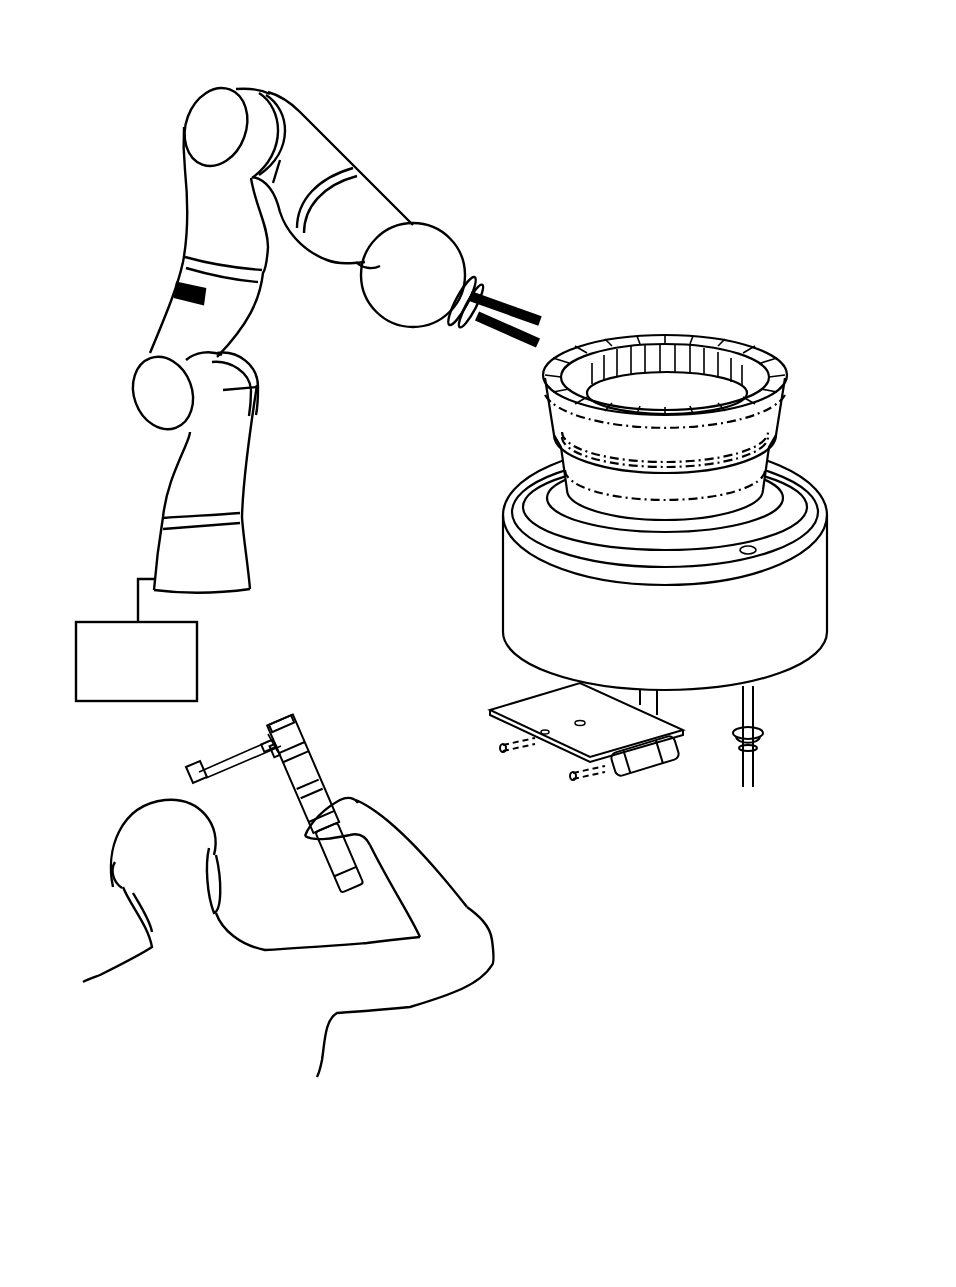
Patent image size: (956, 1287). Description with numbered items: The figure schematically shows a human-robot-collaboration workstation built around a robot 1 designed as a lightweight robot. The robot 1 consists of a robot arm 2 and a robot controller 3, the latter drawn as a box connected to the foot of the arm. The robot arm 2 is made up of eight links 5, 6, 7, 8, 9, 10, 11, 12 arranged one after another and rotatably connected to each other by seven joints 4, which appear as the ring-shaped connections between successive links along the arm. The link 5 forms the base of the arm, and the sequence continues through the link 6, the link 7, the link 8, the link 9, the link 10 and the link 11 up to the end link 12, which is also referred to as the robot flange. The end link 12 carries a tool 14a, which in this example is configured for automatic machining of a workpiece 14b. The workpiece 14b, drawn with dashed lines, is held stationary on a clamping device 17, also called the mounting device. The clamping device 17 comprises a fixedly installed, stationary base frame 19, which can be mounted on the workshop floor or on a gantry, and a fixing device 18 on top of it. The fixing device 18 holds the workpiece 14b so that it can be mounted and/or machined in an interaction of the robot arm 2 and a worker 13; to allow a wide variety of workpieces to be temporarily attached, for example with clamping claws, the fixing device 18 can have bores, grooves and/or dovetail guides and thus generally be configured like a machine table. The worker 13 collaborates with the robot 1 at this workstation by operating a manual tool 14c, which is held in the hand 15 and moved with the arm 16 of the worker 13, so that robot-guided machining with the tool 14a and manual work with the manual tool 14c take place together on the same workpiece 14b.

The robot 1 is at (443, 117).
The robot arm 2 is at (180, 261).
The robot controller 3 is at (120, 628).
The joints 4 is at (268, 97).
The link 5 is at (173, 555).
The link 6 is at (185, 463).
The link 7 is at (173, 325).
The link 8 is at (190, 207).
The link 9 is at (320, 141).
The link 10 is at (382, 205).
The link 11 is at (397, 285).
The end link 12 is at (480, 277).
The worker 13 is at (130, 973).
The tool 14a is at (527, 308).
The workpiece 14b is at (723, 340).
The manual tool 14c is at (327, 777).
The hand 15 is at (347, 815).
The arm 16 is at (473, 907).
The clamping device 17 is at (497, 498).
The fixing device 18 is at (563, 505).
The base frame 19 is at (523, 592).